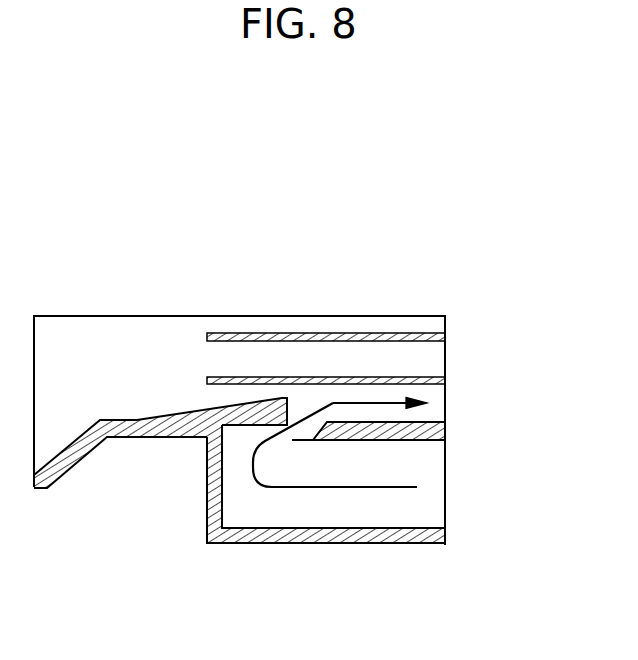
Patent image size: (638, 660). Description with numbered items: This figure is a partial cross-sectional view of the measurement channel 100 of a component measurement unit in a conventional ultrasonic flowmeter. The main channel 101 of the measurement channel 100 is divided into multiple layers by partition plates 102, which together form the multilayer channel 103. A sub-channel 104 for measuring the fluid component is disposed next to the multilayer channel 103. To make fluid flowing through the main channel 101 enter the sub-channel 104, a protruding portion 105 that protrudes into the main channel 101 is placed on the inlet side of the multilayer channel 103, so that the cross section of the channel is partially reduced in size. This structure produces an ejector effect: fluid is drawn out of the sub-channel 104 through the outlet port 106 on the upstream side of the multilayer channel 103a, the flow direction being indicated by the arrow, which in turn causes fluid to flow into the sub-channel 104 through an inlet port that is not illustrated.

The measurement channel 100 is at (93, 243).
The main channel 101 is at (188, 353).
The partition plates 102 is at (412, 380).
The multilayer channel 103 is at (222, 393).
The upstream side of multilayer channel 103a is at (425, 408).
The sub-channel 104 is at (375, 503).
The protruding portion 105 is at (287, 397).
The outlet port 106 is at (305, 410).